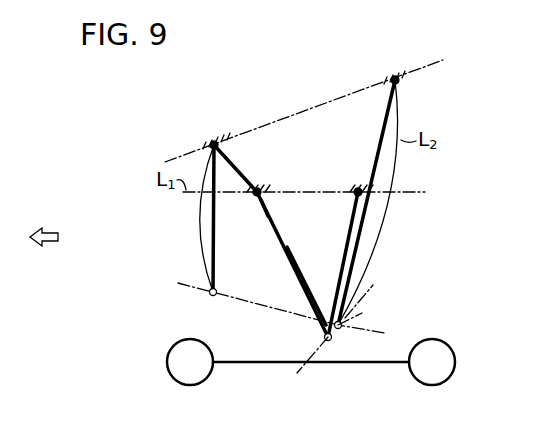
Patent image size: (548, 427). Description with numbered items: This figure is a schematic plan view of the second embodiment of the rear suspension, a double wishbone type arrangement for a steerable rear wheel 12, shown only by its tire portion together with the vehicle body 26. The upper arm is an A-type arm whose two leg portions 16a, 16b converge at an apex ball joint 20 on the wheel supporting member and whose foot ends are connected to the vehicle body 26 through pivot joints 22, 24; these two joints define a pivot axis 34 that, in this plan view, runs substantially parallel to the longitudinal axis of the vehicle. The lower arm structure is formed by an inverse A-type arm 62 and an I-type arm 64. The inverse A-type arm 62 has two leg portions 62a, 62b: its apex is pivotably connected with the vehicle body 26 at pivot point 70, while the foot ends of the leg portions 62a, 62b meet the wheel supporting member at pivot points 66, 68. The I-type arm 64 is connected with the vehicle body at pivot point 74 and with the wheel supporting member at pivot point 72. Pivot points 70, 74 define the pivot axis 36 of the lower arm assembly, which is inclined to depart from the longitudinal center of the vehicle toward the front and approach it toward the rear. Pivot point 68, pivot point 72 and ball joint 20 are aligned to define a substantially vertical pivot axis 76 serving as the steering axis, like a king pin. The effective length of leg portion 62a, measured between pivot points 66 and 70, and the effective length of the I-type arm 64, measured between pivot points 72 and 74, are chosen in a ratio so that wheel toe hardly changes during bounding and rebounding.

The wheel 12 is at (452, 355).
The leg portion of the A-type upper arm 16a is at (292, 268).
The leg portion of the A-type upper arm 16b is at (362, 233).
The ball joint 20 is at (323, 337).
The pivot joint 22 is at (258, 188).
The pivot joint 24 is at (357, 187).
The vehicle body 26 is at (206, 141).
The pivot axis 34 is at (402, 196).
The pivot axis 36 is at (298, 112).
The inverse A-type arm 62 is at (211, 248).
The leg portion of the inverse A-type arm 62a is at (211, 217).
The rear side leg portion of the inverse A-type arm 62b is at (296, 262).
The I-type arm 64 is at (365, 260).
The pivot point 66 is at (212, 296).
The pivot point 68 is at (350, 323).
The pivot point 70 is at (214, 140).
The pivot point 72 is at (343, 330).
The pivot point 74 is at (390, 78).
The pivot axis 76 is at (315, 377).